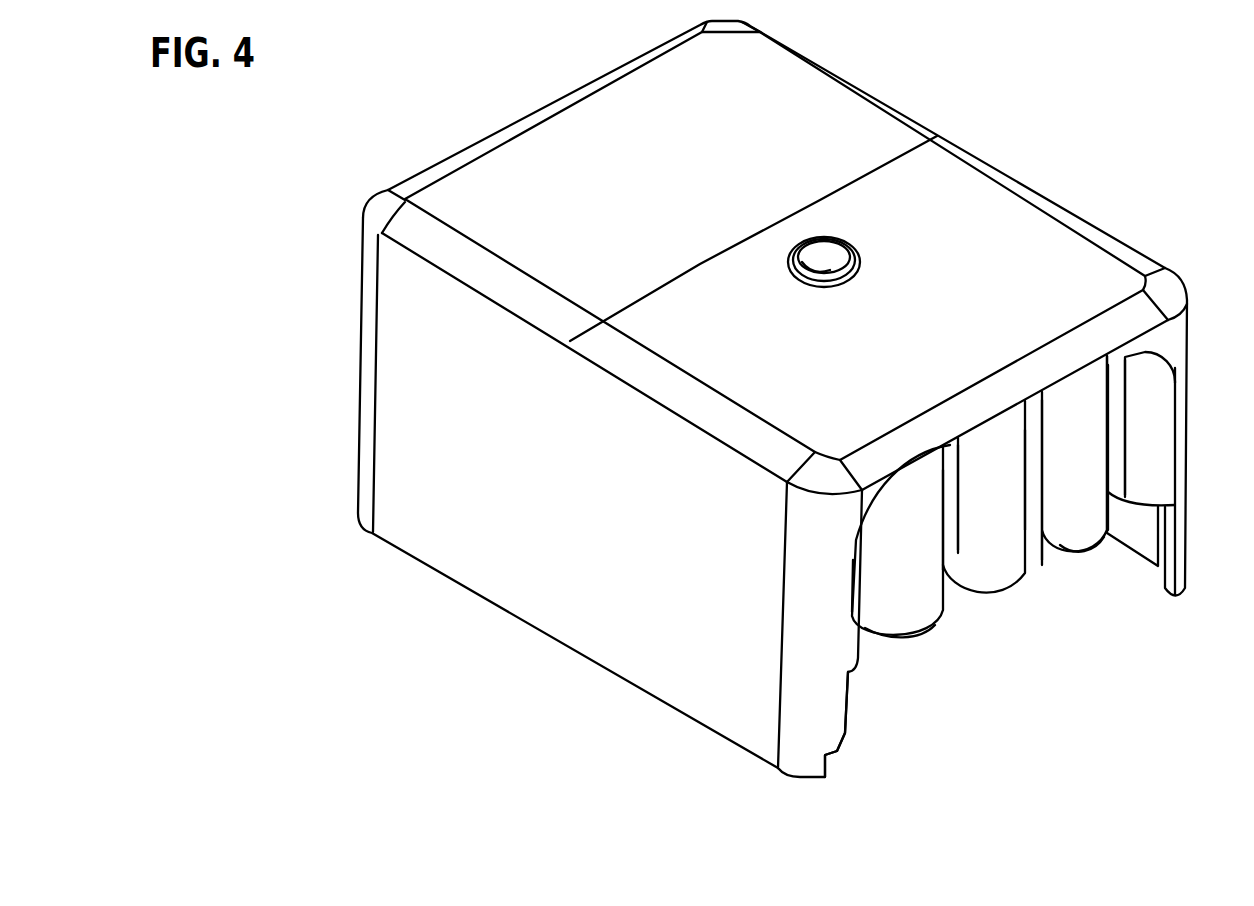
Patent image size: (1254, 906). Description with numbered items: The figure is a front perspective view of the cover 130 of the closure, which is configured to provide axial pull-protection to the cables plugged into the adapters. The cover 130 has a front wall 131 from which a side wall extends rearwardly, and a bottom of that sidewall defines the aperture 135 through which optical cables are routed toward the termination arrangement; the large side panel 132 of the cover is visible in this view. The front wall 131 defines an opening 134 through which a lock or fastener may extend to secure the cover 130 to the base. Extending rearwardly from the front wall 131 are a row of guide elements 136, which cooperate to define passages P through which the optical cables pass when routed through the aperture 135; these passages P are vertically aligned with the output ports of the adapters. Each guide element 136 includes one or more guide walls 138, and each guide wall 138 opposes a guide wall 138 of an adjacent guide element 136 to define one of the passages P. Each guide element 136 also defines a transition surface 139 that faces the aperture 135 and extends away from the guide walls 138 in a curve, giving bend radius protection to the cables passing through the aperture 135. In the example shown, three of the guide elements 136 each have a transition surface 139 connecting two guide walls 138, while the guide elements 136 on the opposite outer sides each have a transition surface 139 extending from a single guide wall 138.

The cover 130 is at (1030, 173).
The front wall 131 is at (664, 201).
The side panel 132 is at (630, 531).
The opening 134 is at (842, 247).
The aperture 135 is at (848, 715).
The guide element 136 is at (914, 654).
The guide wall 138 is at (858, 613).
The transition surface 139 is at (932, 548).
The passage P is at (1124, 411).